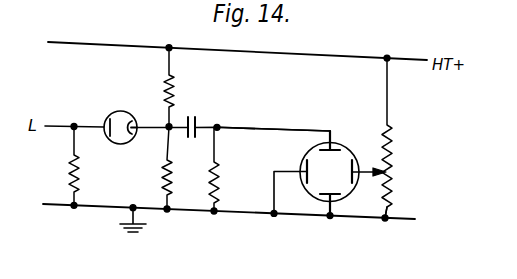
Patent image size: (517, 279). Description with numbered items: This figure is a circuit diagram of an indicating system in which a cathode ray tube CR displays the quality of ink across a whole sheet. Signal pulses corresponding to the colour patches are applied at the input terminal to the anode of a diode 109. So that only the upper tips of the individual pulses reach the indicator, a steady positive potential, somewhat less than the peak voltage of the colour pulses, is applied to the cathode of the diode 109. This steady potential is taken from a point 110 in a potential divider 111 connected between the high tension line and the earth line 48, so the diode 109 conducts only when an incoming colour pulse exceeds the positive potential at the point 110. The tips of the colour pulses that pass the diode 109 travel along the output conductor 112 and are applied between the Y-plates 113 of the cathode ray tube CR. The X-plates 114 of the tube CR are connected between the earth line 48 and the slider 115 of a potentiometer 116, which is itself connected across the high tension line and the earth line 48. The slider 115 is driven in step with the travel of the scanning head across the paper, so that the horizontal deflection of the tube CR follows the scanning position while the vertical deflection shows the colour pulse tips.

The diode 109 is at (120, 112).
The point 110 is at (170, 123).
The potential divider 111 is at (178, 90).
The output conductor 112 is at (248, 125).
The Y-plates 113 is at (326, 138).
The X-plates 114 is at (302, 161).
The slider 115 is at (367, 175).
The potentiometer 116 is at (377, 216).
The earth line 48 is at (232, 213).
The cathode ray tube CR is at (342, 143).